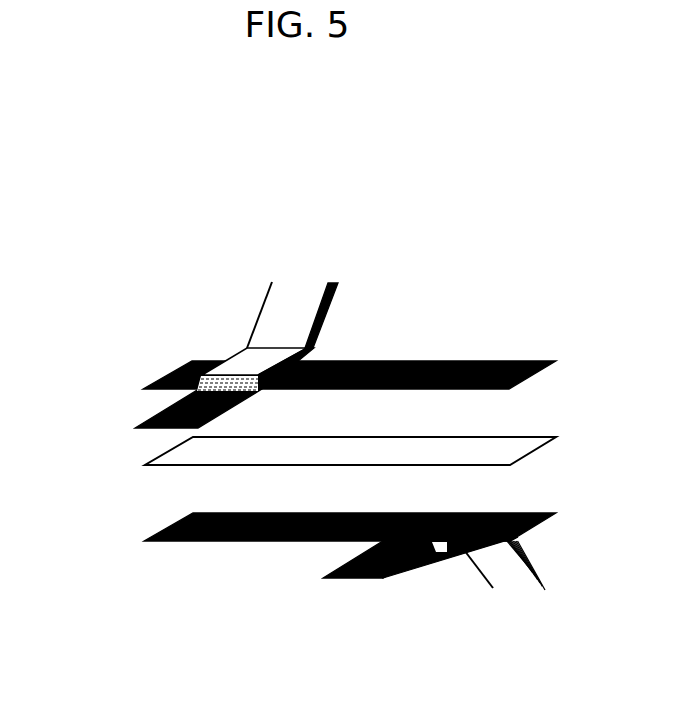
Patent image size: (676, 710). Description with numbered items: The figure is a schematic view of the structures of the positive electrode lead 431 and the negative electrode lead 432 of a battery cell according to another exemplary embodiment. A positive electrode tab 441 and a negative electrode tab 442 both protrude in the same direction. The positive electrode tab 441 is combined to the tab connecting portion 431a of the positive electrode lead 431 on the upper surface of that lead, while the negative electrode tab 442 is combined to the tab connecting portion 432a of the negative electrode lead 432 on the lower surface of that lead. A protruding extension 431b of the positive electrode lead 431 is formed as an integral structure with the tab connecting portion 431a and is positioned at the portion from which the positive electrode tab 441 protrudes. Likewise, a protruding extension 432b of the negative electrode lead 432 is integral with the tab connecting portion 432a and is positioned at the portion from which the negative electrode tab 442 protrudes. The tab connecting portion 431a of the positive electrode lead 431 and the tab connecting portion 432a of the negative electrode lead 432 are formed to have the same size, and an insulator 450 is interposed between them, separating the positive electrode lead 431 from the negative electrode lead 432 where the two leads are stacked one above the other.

The positive electrode lead 431 is at (289, 400).
The tab connecting portion 431a is at (171, 373).
The protruding extension 431b is at (164, 429).
The positive electrode tab 441 is at (238, 312).
The insulator 450 is at (485, 448).
The negative electrode lead 432 is at (350, 565).
The tab connecting portion 432a is at (352, 578).
The protruding extension 432b is at (344, 532).
The negative electrode tab 442 is at (470, 582).